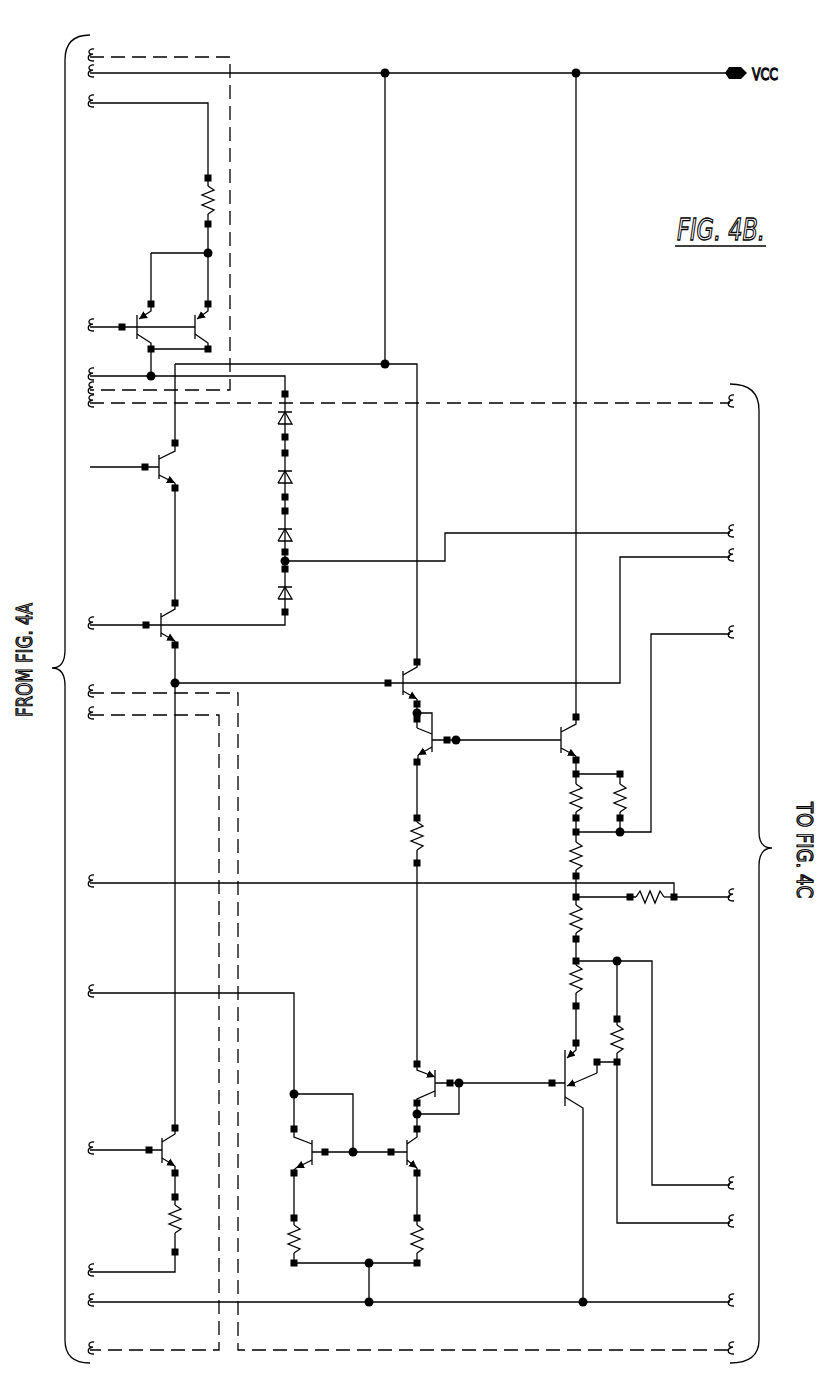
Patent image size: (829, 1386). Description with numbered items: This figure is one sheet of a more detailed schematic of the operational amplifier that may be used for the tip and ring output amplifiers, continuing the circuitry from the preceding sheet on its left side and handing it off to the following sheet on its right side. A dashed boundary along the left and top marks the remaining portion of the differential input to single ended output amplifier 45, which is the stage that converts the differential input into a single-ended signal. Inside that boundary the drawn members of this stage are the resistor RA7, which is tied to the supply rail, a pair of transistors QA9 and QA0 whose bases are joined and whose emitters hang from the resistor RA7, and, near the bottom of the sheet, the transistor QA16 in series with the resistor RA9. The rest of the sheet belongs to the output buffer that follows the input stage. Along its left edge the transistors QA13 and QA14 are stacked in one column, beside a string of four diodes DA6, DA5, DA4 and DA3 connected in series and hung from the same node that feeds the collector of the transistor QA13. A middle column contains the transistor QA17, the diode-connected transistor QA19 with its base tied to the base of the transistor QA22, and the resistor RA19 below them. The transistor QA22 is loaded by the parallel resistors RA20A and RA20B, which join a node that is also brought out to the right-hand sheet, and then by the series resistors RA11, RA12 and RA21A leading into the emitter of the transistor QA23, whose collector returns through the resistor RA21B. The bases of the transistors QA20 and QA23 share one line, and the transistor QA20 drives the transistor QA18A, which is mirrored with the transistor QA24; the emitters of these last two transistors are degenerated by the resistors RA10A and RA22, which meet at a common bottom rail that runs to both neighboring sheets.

The differential input to single ended output amplifier 45 is at (236, 61).
The resistor RA7 is at (209, 197).
The transistor QA9 is at (156, 324).
The transistor QA0 is at (222, 324).
The transistor QA13 is at (158, 466).
The transistor QA14 is at (185, 620).
The diode DA6 is at (268, 419).
The diode DA5 is at (268, 481).
The diode DA4 is at (267, 535).
The diode DA3 is at (267, 593).
The transistor QA17 is at (426, 679).
The transistor QA19 is at (399, 737).
The transistor QA22 is at (594, 737).
The resistor RA20A is at (547, 803).
The resistor RA20B is at (645, 801).
The resistor RA19 is at (441, 836).
The resistor RA11 is at (601, 869).
The resistor RA12 is at (601, 929).
The resistor RA21A is at (604, 1004).
The resistor RA21B is at (639, 1034).
The transistor QA20 is at (401, 1081).
The transistor QA23 is at (596, 1172).
The transistor QA24 is at (280, 1149).
The transistor QA18A is at (436, 1148).
The transistor QA16 is at (156, 1149).
The resistor RA9 is at (193, 1223).
The resistor RA22 is at (319, 1239).
The resistor RA10A is at (451, 1239).